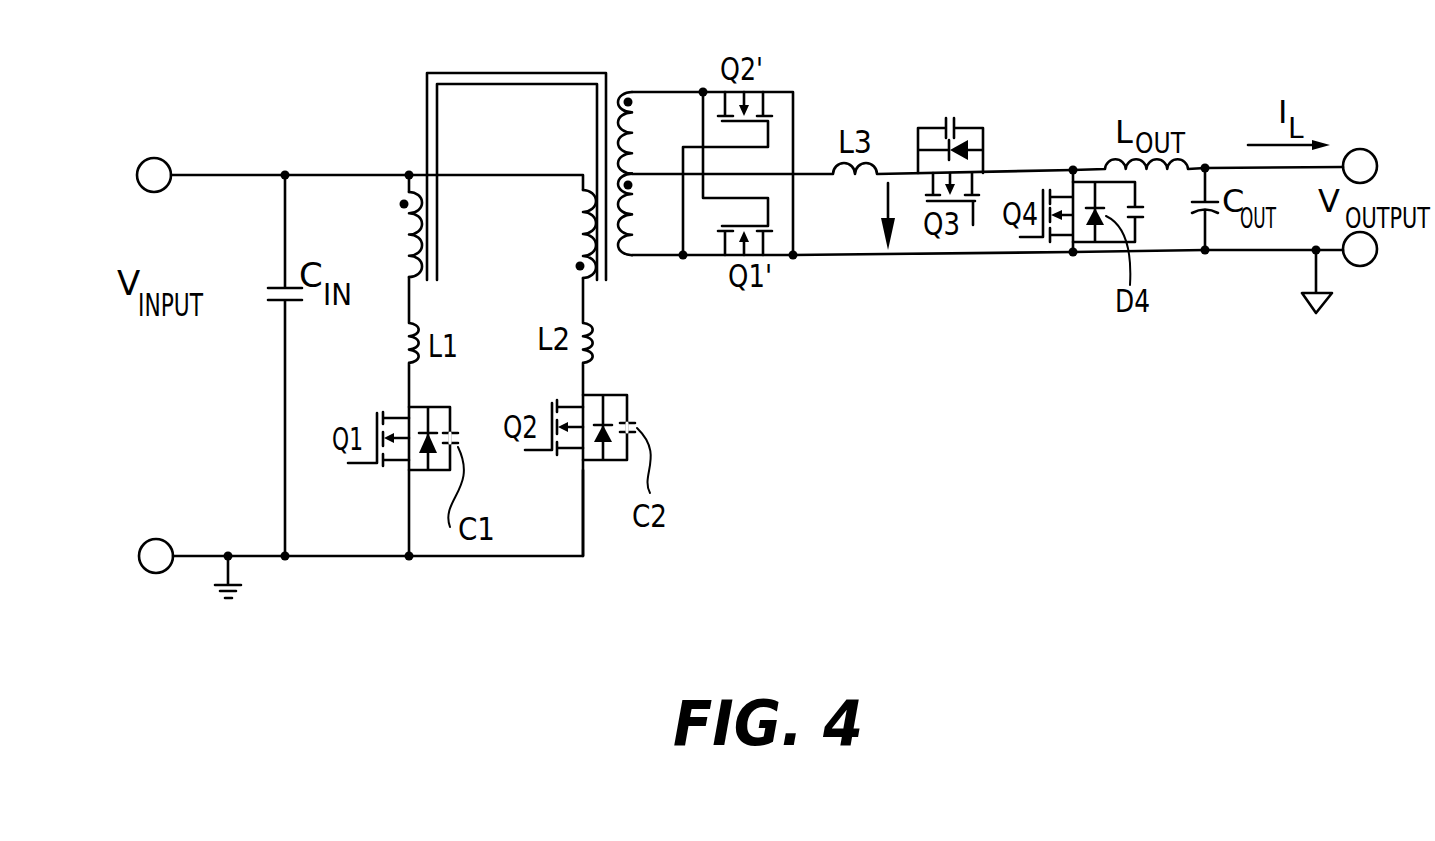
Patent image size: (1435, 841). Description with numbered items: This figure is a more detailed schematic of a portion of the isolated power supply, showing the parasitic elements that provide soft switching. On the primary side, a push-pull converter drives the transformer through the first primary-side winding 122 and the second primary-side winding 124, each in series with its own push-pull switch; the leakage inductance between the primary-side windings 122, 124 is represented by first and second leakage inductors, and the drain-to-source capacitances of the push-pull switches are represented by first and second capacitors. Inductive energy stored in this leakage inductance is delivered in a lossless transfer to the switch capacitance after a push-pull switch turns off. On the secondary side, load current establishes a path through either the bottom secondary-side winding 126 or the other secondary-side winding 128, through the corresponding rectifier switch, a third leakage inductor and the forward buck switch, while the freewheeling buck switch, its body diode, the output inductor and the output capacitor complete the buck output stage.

The first primary-side winding 122 is at (405, 237).
The second primary-side winding 124 is at (582, 234).
The bottom secondary-side winding 126 is at (632, 218).
The secondary-side winding 128 is at (632, 129).